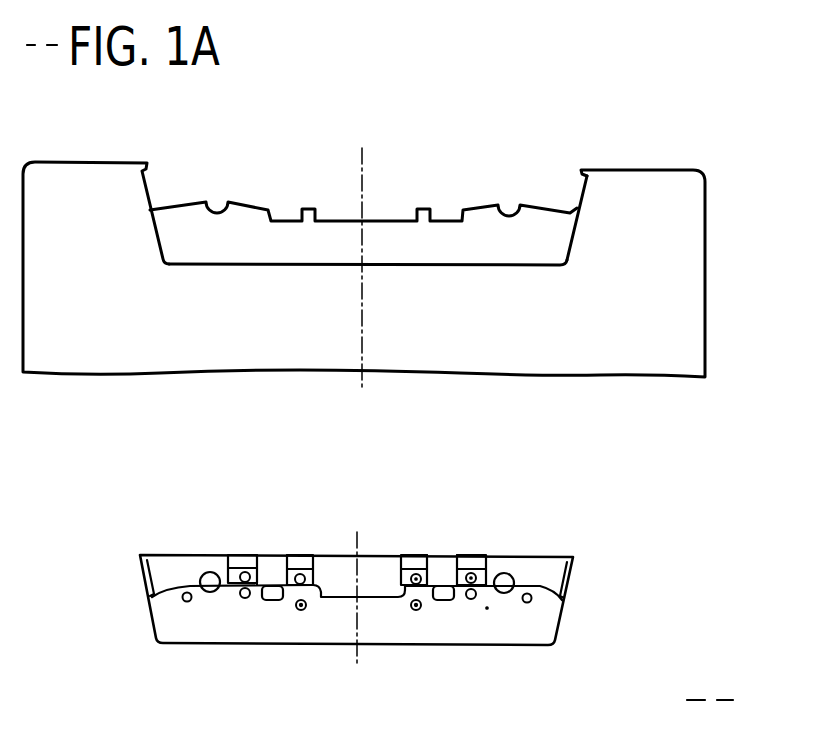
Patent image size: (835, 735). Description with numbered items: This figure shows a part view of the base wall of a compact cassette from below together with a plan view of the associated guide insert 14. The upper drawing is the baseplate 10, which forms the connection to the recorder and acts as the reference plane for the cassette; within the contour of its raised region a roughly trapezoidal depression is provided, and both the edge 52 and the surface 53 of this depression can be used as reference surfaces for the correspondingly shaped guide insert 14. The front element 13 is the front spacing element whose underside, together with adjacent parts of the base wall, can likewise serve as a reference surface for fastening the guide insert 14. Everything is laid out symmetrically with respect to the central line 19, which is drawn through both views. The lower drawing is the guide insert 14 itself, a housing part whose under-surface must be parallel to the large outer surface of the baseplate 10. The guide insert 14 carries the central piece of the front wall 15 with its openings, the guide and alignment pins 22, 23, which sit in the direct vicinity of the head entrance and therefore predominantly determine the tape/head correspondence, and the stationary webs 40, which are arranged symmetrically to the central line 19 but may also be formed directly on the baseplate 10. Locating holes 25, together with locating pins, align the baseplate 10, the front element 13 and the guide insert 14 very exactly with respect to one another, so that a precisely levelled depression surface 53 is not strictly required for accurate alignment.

The baseplate 10 is at (677, 296).
The central line 19 is at (365, 170).
The front element 13 is at (239, 201).
The surface of the depression 53 is at (500, 256).
The edge of the depression 52 is at (572, 244).
The guide insert 14 is at (498, 622).
The stationary webs 40 is at (567, 588).
The central piece of the front wall 15 is at (245, 554).
The guide and alignment pin 23 is at (418, 565).
The guide and alignment pin 22 is at (475, 565).
The locating holes 25 is at (414, 609).